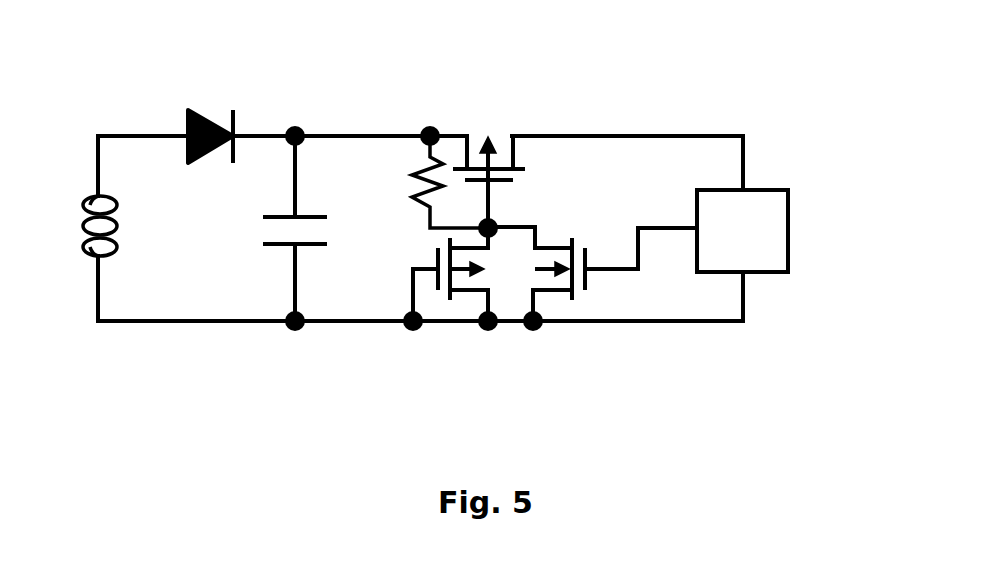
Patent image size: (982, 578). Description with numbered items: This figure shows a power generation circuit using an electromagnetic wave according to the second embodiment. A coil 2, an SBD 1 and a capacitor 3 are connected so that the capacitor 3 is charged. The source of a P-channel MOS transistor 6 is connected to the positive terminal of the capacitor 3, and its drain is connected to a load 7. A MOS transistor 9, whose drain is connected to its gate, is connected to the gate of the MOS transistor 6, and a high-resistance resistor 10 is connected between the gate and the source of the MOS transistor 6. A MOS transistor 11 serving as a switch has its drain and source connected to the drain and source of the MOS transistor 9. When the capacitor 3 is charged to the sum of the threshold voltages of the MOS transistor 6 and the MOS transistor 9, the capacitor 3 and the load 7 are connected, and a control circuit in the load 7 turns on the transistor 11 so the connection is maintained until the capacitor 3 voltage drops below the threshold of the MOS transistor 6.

The SBD 1 is at (173, 110).
The coil 2 is at (70, 271).
The capacitor 3 is at (280, 257).
The P-channel MOS transistor 6 is at (502, 123).
The load 7 is at (782, 180).
The MOS transistor 9 is at (467, 308).
The high-resistance resistor 10 is at (412, 162).
The MOS transistor 11 is at (593, 298).